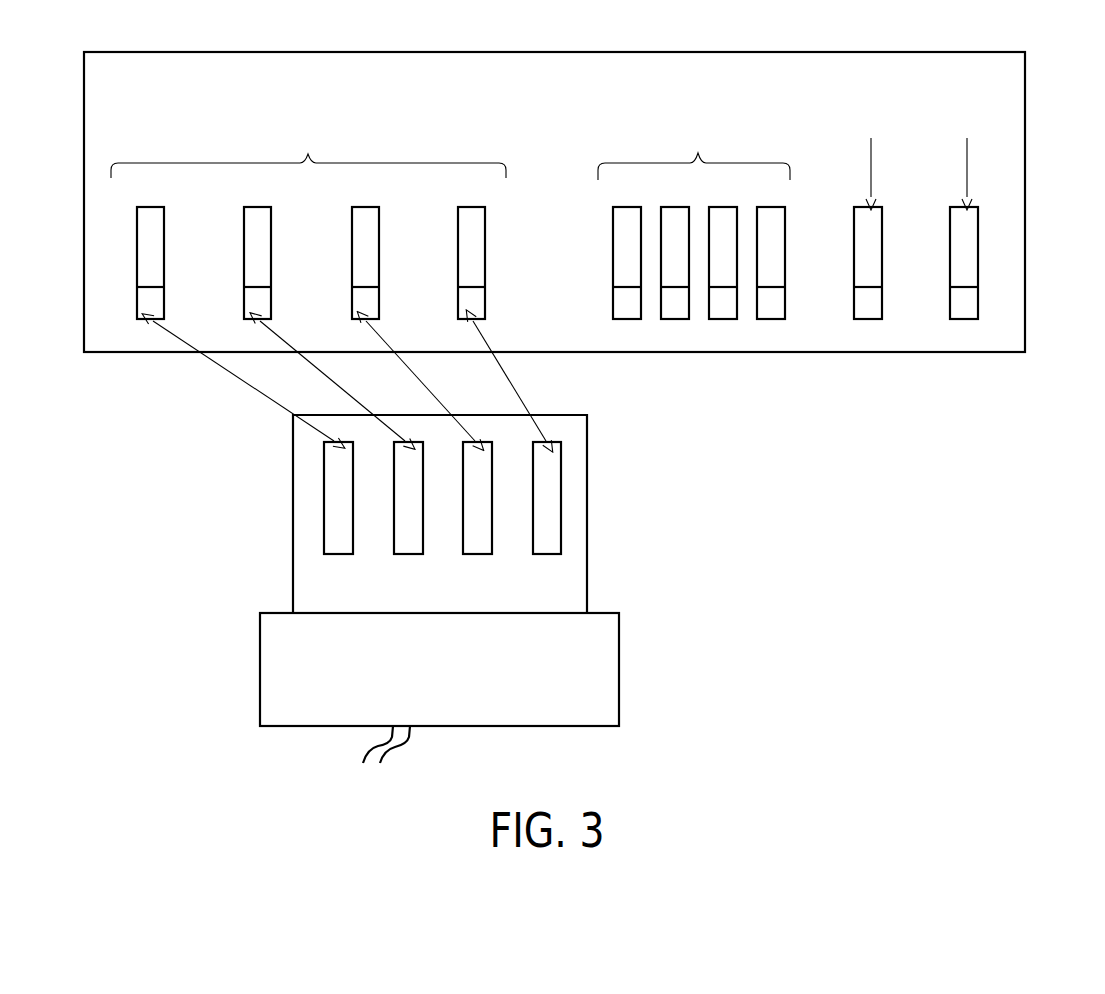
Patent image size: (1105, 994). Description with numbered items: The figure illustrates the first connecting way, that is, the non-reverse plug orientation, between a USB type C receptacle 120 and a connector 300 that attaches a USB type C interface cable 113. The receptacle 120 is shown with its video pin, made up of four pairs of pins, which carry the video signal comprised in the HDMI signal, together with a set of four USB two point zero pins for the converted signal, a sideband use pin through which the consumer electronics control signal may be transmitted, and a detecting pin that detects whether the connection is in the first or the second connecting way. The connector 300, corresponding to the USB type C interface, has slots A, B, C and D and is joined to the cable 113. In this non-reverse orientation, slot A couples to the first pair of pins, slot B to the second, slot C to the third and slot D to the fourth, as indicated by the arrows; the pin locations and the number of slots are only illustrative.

The receptacle 120 is at (1025, 128).
The connector 300 is at (619, 663).
The USB type C interface cable 113 is at (405, 745).